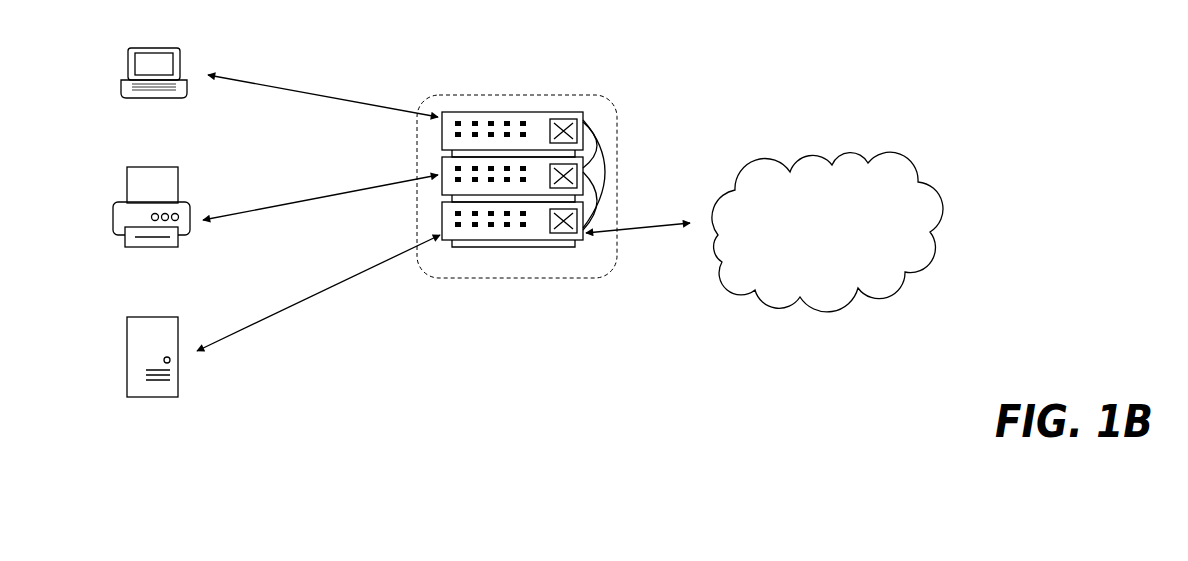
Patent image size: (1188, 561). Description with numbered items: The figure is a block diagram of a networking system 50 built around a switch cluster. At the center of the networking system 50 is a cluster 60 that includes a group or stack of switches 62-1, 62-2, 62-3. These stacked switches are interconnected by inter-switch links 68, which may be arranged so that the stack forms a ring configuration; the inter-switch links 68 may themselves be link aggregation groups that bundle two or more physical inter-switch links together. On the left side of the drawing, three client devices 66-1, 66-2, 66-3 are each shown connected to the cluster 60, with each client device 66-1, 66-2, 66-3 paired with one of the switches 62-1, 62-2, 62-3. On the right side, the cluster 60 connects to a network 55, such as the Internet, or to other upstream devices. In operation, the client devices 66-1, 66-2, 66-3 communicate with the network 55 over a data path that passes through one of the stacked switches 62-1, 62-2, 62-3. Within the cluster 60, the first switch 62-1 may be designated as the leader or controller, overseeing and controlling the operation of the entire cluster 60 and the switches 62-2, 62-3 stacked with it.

The networking system 50 is at (1095, 72).
The network 55 is at (827, 232).
The cluster 60 is at (580, 278).
The first switch 62-1 is at (442, 131).
The switch 62-2 is at (442, 188).
The switch 62-3 is at (445, 241).
The client device 66-1 is at (154, 88).
The client device 66-2 is at (151, 224).
The client device 66-3 is at (152, 371).
The inter-switch links 68 is at (606, 160).